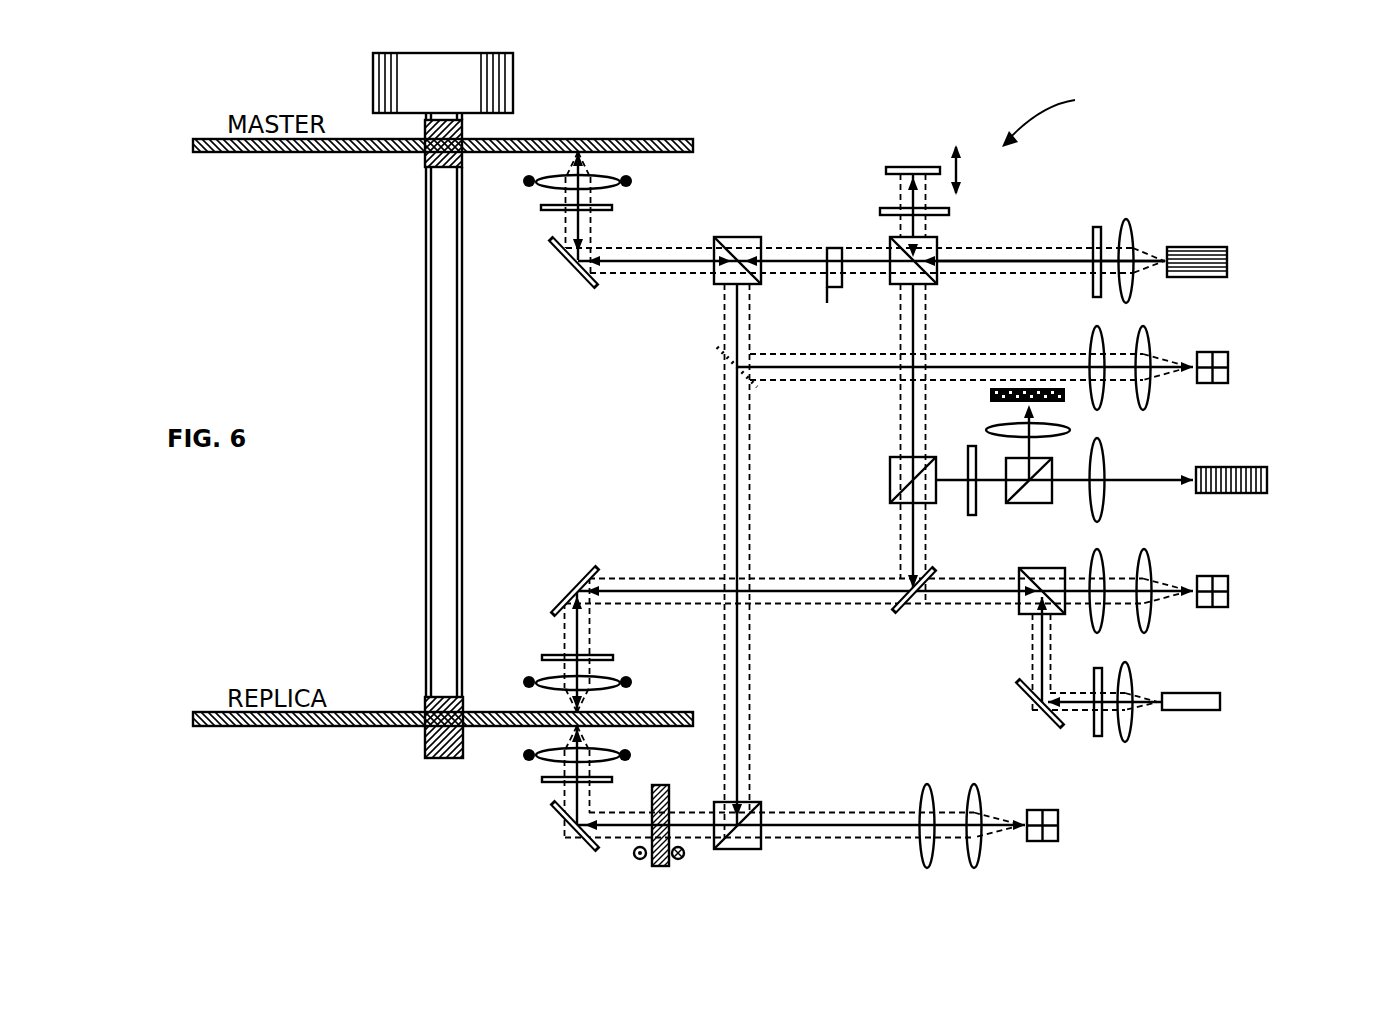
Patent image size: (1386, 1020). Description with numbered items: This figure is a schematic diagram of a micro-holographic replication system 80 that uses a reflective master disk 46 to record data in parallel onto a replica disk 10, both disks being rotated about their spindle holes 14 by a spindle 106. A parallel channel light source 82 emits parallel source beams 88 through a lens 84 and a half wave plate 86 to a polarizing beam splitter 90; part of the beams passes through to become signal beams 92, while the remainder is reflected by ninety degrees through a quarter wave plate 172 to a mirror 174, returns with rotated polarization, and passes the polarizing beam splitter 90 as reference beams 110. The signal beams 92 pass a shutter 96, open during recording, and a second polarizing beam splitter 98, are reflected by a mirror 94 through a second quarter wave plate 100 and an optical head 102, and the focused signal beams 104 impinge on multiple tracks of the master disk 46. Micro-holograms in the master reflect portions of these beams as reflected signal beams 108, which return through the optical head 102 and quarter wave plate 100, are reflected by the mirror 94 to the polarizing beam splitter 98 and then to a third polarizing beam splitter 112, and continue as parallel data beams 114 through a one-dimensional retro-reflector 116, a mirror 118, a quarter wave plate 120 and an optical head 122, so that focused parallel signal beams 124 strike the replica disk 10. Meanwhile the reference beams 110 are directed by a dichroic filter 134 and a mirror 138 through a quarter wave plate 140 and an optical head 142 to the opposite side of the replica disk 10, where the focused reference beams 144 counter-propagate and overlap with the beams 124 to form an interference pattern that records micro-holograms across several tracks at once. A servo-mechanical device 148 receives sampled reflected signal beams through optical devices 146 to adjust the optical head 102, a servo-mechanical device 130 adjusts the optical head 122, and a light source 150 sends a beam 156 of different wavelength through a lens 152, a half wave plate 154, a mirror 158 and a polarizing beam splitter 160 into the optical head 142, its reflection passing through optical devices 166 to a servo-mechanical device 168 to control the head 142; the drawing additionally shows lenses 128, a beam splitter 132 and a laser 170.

The replica disk 10 is at (338, 712).
The spindle hole 14 is at (430, 166).
The master disk 46 is at (627, 139).
The replication system 80 is at (1055, 116).
The parallel channel light source 82 is at (1228, 262).
The lens 84 is at (1133, 230).
The half wave plate 86 is at (1097, 226).
The parallel source beams 88 is at (1037, 260).
The polarizing beam splitter 90 is at (928, 283).
The signal beams 92 is at (575, 218).
The mirror 94 is at (556, 268).
The shutter 96 is at (835, 248).
The second polarizing beam splitter 98 is at (742, 237).
The second quarter wave plate 100 is at (612, 208).
The optical head 102 is at (553, 190).
The focused signal beams 104 is at (585, 155).
The spindle 106 is at (514, 98).
The reflected signal beams 108 is at (583, 237).
The reference beams 110 is at (906, 330).
The third polarizing beam splitter 112 is at (758, 803).
The parallel data beams 114 is at (737, 367).
The one-dimensional retro-reflector 116 is at (670, 800).
The mirror 118 is at (568, 830).
The quarter wave plate 120 is at (553, 784).
The optical head 122 is at (547, 762).
The focused parallel signal beams 124 is at (592, 727).
The lenses 128 is at (920, 786).
The servo-mechanical device 130 is at (1060, 826).
The beam splitter 132 is at (890, 480).
The dichroic filter 134 is at (918, 600).
The mirror 138 is at (560, 578).
The quarter wave plate 140 is at (556, 655).
The optical head 142 is at (545, 680).
The focused reference beams 144 is at (590, 710).
The optical devices 146 is at (1092, 340).
The servo-mechanical device 148 is at (1230, 368).
The light source 150 is at (1222, 701).
The lens 152 is at (1128, 742).
The half wave plate 154 is at (1092, 736).
The beam 156 is at (1067, 690).
The mirror 158 is at (1020, 705).
The polarizing beam splitter 160 is at (1028, 568).
The optical devices 166 is at (1092, 565).
The servo-mechanical device 168 is at (1230, 590).
The laser 170 is at (1268, 480).
The quarter wave plate 172 is at (950, 211).
The mirror 174 is at (912, 167).